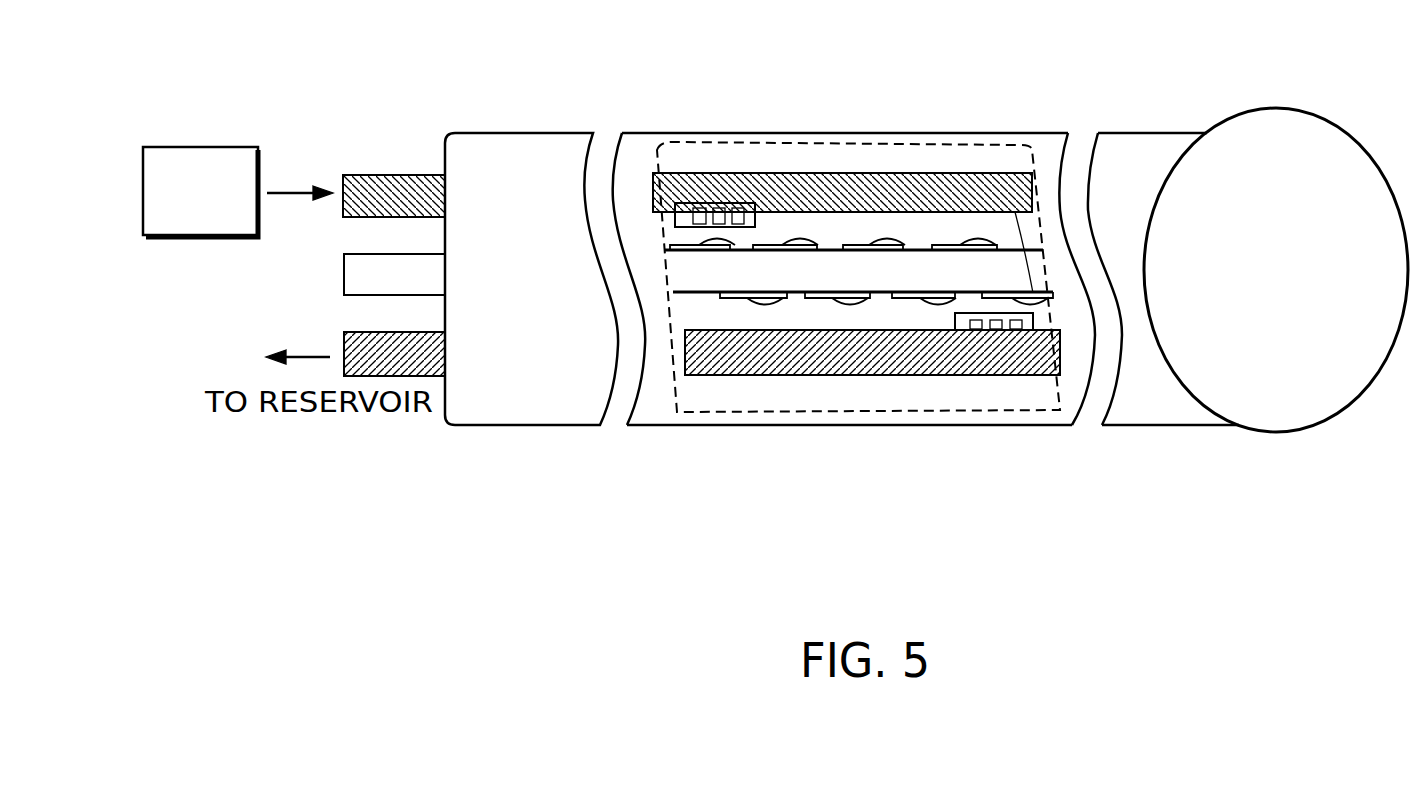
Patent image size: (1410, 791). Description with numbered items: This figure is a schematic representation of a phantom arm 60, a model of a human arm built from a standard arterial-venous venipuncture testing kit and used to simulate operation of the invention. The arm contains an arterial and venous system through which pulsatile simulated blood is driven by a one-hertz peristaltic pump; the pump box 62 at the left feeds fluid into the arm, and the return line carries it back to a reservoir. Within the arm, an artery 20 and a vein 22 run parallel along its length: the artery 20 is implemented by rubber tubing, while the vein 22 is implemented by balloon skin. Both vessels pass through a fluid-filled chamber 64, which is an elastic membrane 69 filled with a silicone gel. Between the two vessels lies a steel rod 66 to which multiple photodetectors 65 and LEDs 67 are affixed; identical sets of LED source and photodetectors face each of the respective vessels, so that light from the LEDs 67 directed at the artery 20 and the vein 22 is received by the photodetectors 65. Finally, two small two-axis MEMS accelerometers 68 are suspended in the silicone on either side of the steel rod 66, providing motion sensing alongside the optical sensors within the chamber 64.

The phantom arm 60 is at (1237, 57).
The pump 62 is at (200, 147).
The steel rod 66 is at (344, 272).
The two-axis MEMS accelerometers 68 is at (703, 198).
The artery 20 is at (840, 173).
The photodetectors 65 is at (887, 238).
The LEDs 67 is at (793, 253).
The vein 22 is at (886, 375).
The elastic membrane 69 is at (653, 403).
The fluid-filled chamber 64 is at (628, 495).